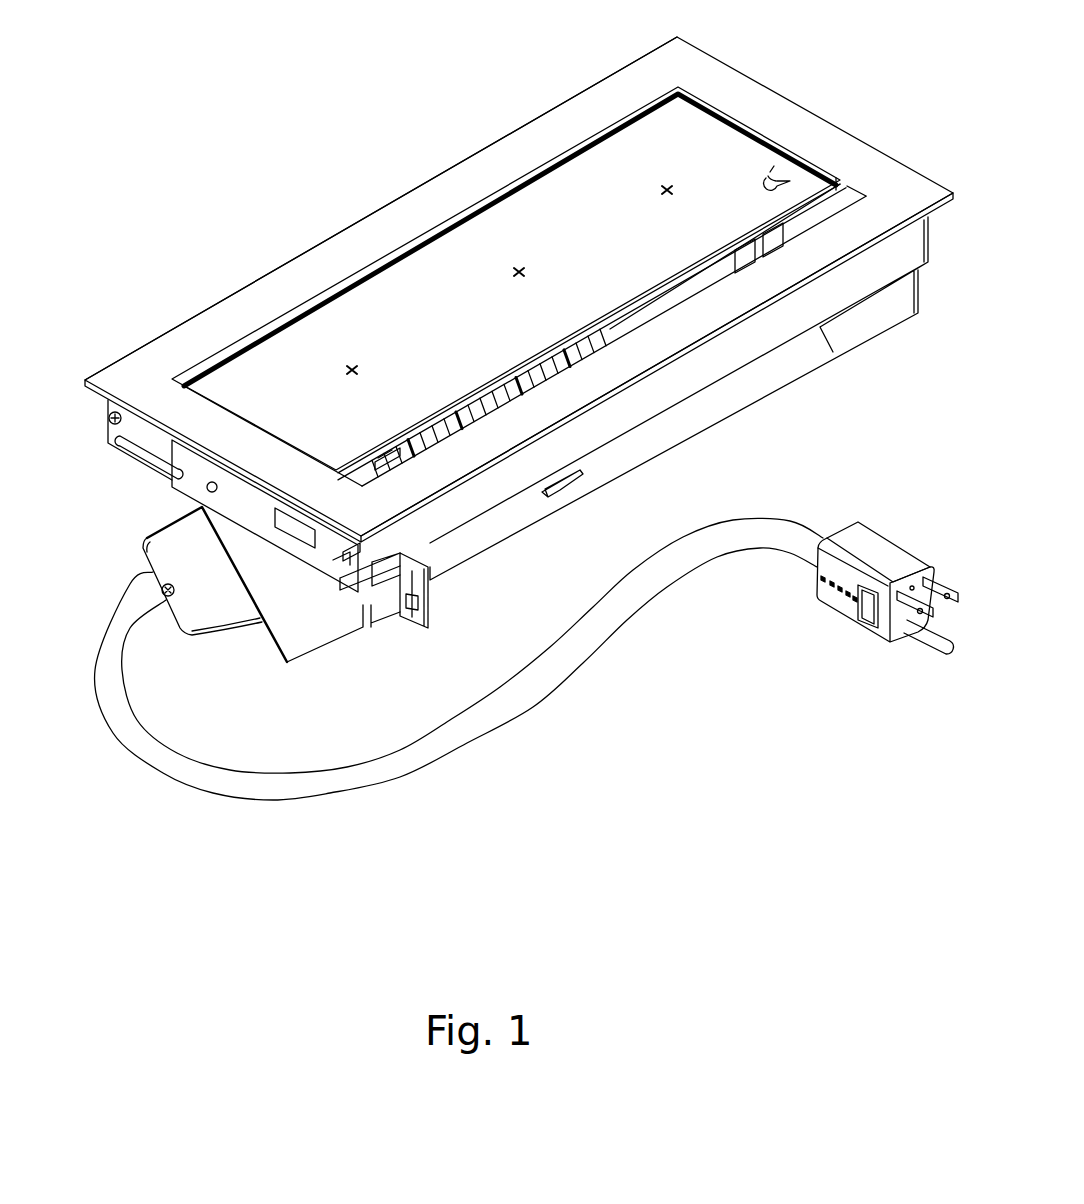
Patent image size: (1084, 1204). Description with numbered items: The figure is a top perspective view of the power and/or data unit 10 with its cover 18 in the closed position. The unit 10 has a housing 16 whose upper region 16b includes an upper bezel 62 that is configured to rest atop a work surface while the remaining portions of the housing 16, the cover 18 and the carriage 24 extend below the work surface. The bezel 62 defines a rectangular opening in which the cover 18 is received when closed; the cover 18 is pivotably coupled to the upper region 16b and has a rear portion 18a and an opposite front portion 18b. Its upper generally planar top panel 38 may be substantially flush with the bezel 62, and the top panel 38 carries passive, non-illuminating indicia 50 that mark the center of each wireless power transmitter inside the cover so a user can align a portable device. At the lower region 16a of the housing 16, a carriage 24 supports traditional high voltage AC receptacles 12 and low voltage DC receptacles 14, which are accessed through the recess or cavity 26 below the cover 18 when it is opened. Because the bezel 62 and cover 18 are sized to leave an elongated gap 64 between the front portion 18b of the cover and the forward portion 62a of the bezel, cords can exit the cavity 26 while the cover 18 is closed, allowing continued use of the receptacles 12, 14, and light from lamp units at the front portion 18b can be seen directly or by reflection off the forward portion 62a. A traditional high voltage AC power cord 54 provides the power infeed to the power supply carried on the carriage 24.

The power and/or data unit 10 is at (234, 49).
The high voltage AC receptacles 12 is at (550, 372).
The low voltage DC receptacles 14 is at (410, 443).
The housing 16 is at (112, 443).
The lower region of housing 16a is at (366, 650).
The upper region of housing 16b is at (152, 281).
The cover 18 is at (783, 108).
The rear portion of cover 18a is at (505, 183).
The front portion of cover 18b is at (673, 266).
The carriage 24 is at (221, 634).
The cavity 26 is at (658, 303).
The top panel 38 is at (556, 185).
The indicia 50 is at (666, 190).
The power cord 54 is at (593, 607).
The bezel 62 is at (362, 236).
The forward portion of bezel 62a is at (727, 285).
The gap 64 is at (849, 183).